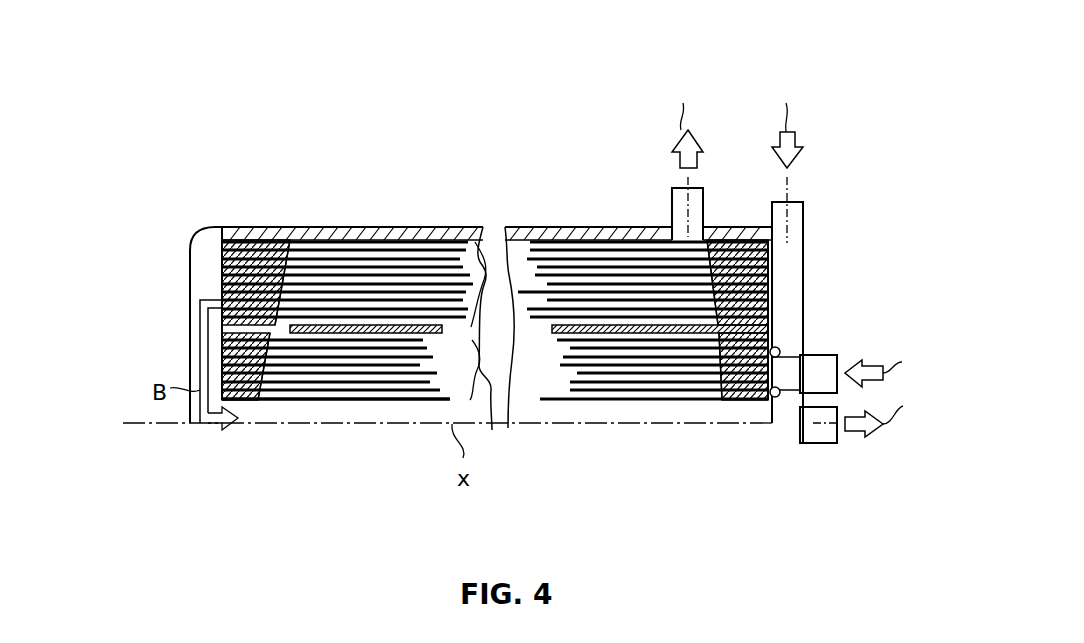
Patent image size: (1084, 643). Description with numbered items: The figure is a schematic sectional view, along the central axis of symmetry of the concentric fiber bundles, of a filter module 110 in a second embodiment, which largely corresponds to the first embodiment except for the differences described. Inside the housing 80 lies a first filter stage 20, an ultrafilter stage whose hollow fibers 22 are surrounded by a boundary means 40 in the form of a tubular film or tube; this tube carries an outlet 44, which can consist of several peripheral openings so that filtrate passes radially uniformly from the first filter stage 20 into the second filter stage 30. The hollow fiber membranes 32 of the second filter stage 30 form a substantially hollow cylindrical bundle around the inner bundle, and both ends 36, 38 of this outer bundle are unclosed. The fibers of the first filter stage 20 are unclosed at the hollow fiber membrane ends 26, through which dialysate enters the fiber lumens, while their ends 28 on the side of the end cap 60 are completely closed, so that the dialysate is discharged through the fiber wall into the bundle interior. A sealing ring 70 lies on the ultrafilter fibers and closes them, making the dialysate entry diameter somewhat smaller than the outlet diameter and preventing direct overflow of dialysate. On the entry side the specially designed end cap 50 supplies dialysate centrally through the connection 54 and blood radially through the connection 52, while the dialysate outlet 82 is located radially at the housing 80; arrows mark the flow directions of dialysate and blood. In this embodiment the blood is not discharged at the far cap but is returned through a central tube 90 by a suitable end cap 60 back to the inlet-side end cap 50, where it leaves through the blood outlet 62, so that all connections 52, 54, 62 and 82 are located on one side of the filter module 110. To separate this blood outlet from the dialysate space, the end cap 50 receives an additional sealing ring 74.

The filter module 110 is at (178, 150).
The end of fiber bundle 38 is at (196, 246).
The housing 80 is at (333, 233).
The hollow fiber membranes 32 is at (403, 256).
The hollow fibers 22 is at (655, 401).
The end of fiber bundle 36 is at (770, 294).
The hollow fiber membrane ends 26 is at (733, 400).
The ends of the hollow fibers 28 is at (270, 331).
The outlet 44 is at (276, 334).
The boundary means 40 is at (552, 334).
The first filter stage 20 is at (493, 400).
The second filter stage 30 is at (492, 278).
The central tube 90 is at (383, 415).
The end cap 60 is at (190, 350).
The dialysate outlet 82 is at (670, 222).
The connection 52 is at (798, 203).
The end cap 50 is at (803, 247).
The sealing ring 70 is at (780, 350).
The additional sealing ring 74 is at (775, 398).
The connection 54 is at (825, 355).
The blood outlet 62 is at (820, 444).